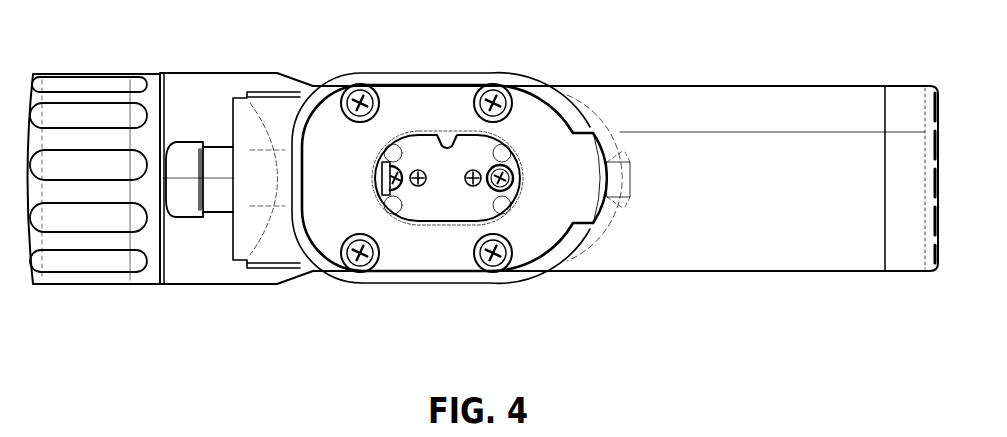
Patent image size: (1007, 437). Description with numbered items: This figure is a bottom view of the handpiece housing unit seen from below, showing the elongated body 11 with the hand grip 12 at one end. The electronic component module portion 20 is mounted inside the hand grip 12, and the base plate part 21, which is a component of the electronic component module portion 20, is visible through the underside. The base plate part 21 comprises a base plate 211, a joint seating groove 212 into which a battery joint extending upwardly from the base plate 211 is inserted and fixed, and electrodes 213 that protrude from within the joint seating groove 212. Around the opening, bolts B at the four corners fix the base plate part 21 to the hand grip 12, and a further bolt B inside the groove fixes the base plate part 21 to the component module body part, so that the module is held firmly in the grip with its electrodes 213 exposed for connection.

The body 11 is at (679, 72).
The hand grip 12 is at (340, 289).
The electronic component module portion 20 is at (454, 270).
The base plate part 21 is at (403, 107).
The base plate 211 is at (548, 233).
The joint seating groove 212 is at (466, 152).
The electrodes 213 is at (420, 186).
The bolt B is at (503, 88).